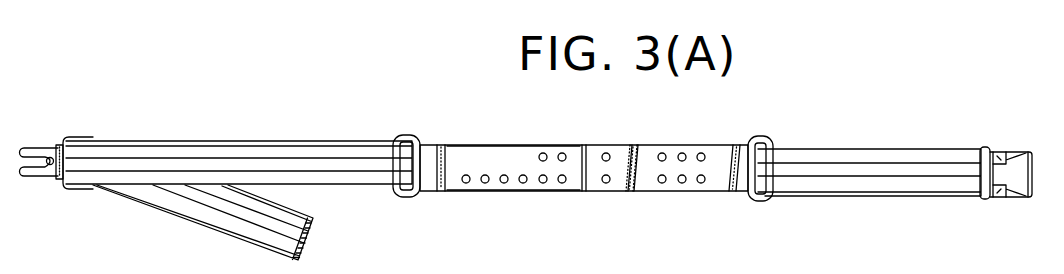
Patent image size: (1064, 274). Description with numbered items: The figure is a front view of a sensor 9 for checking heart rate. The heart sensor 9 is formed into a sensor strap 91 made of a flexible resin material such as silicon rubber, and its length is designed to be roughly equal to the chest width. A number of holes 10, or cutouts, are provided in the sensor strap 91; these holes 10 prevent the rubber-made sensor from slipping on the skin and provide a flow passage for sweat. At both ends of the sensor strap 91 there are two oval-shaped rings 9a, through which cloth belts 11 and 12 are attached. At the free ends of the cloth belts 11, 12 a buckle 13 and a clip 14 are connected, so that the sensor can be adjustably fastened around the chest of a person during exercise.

The sensor for checking heart rate 9 is at (614, 197).
The oval-shaped rings 9a is at (408, 134).
The sensor strap 91 is at (503, 152).
The holes 10 is at (485, 183).
The cloth belt 11 is at (895, 150).
The cloth belt 12 is at (336, 141).
The buckle 13 is at (1017, 150).
The clip 14 is at (62, 141).